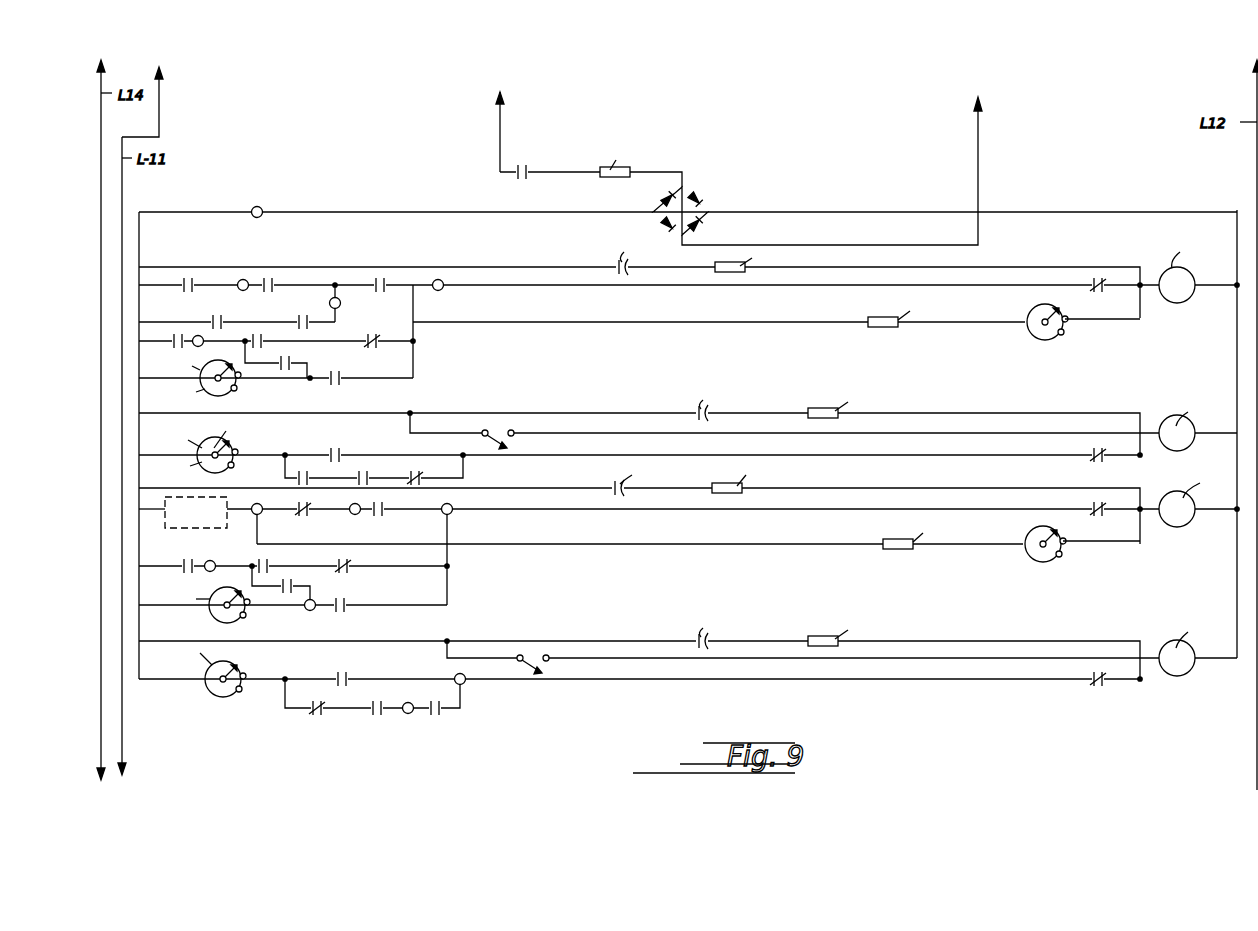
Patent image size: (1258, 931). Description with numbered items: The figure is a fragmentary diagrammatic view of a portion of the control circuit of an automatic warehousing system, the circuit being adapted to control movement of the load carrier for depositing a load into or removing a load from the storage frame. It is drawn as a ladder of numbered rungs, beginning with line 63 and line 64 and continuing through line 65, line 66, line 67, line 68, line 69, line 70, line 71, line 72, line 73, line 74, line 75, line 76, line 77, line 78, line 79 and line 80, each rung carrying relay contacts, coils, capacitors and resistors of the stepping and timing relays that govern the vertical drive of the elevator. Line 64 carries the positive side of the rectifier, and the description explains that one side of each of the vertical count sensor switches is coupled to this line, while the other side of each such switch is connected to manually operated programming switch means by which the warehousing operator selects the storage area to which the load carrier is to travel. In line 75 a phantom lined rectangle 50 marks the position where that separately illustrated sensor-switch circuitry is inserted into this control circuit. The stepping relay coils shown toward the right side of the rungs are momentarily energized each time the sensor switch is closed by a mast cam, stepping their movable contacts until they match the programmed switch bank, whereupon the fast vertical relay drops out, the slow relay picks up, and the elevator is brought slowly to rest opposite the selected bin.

The phantom lined rectangle 50 is at (200, 528).
The line 63 is at (96, 179).
The line 64 is at (96, 222).
The line 65 is at (96, 249).
The line 66 is at (96, 272).
The line 67 is at (96, 294).
The line 68 is at (96, 332).
The line 69 is at (96, 350).
The line 70 is at (96, 387).
The line 71 is at (96, 422).
The line 72 is at (96, 442).
The line 73 is at (96, 464).
The line 74 is at (96, 497).
The line 75 is at (96, 520).
The line 76 is at (96, 553).
The line 77 is at (96, 574).
The line 78 is at (96, 613).
The line 79 is at (96, 650).
The line 80 is at (96, 687).